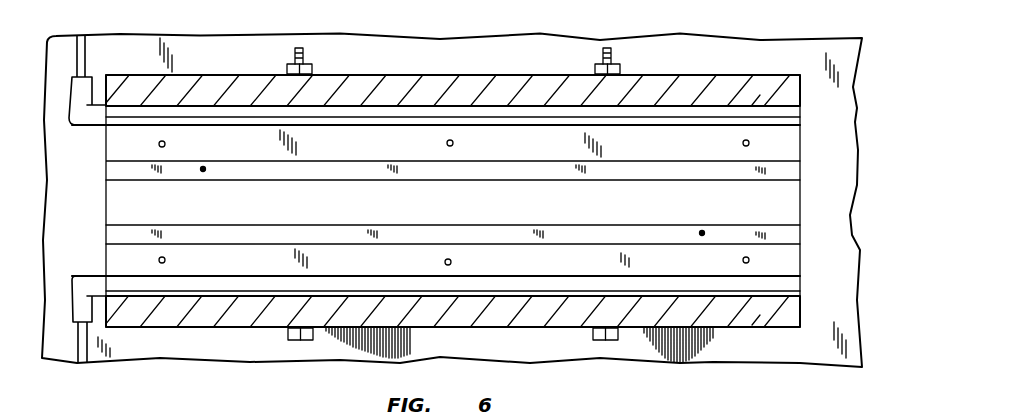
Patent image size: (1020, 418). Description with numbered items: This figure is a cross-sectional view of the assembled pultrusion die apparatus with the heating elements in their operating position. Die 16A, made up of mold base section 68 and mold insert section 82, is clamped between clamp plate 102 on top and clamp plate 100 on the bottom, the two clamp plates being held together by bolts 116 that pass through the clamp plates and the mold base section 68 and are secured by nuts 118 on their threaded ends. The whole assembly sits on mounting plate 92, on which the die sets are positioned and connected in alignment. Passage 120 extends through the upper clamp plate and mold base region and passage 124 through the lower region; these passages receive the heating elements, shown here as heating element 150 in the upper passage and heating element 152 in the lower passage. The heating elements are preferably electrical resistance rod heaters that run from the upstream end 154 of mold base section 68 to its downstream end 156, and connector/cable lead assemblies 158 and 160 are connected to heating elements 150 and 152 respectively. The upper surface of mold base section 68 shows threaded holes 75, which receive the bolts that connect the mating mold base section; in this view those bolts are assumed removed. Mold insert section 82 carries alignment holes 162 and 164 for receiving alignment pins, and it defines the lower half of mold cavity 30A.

The mounting plate 92 is at (518, 43).
The clamp plate 102 is at (453, 63).
The clamp plate 100 is at (453, 322).
The nut 118 is at (323, 56).
The bolt 116 is at (302, 340).
The passage 120 is at (753, 107).
The passage 124 is at (757, 298).
The heating element 150 is at (801, 117).
The heating element 152 is at (801, 290).
The upstream end 154 is at (101, 156).
The downstream end 156 is at (801, 171).
The mold insert section 82 is at (106, 180).
The mold cavity 30A is at (803, 188).
The die 16A is at (808, 236).
The mold base section 68 is at (107, 262).
The alignment hole 162 is at (203, 171).
The alignment hole 164 is at (702, 232).
The threaded holes 75 is at (159, 144).
The connector/cable lead assembly 158 is at (73, 80).
The connector/cable lead assembly 160 is at (71, 314).